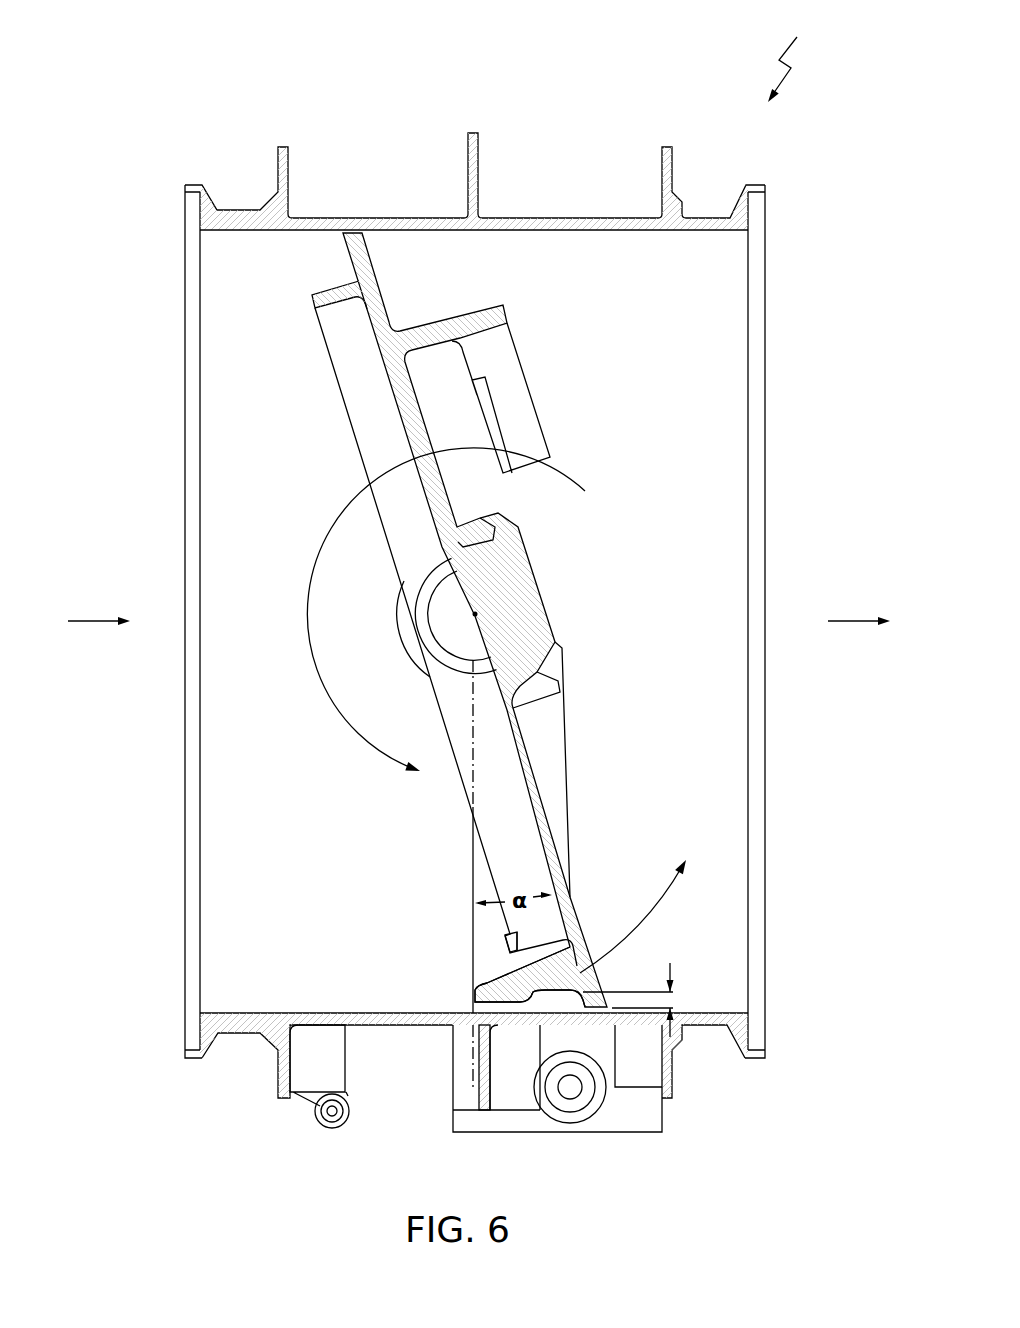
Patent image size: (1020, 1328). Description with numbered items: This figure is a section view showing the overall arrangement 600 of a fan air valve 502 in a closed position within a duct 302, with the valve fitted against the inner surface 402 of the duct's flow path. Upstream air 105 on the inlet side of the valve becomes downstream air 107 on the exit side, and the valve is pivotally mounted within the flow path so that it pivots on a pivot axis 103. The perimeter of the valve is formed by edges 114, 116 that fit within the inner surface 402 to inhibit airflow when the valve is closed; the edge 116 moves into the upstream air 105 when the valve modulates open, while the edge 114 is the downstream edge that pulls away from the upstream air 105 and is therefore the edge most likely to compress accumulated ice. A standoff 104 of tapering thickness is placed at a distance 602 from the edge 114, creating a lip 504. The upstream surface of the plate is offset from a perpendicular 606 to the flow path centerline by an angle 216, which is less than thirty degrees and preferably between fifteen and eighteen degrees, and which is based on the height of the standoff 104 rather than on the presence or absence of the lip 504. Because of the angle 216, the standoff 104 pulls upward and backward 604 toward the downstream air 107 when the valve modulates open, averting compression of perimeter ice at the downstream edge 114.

The valve assembly 600 is at (802, 53).
The duct 302 is at (243, 210).
The edge 116 is at (350, 233).
The inner surface 402 is at (257, 232).
The upstream air 105 is at (92, 612).
The downstream air 107 is at (852, 612).
The pivot axis 103 is at (476, 613).
The perpendicular 606 is at (458, 852).
The angle 216 is at (499, 900).
The fan air valve 502 is at (550, 826).
The upward and backward direction 604 is at (650, 920).
The lip 504 is at (578, 973).
The distance 602 is at (670, 968).
The standoff 104 is at (487, 983).
The edge 114 is at (475, 1002).